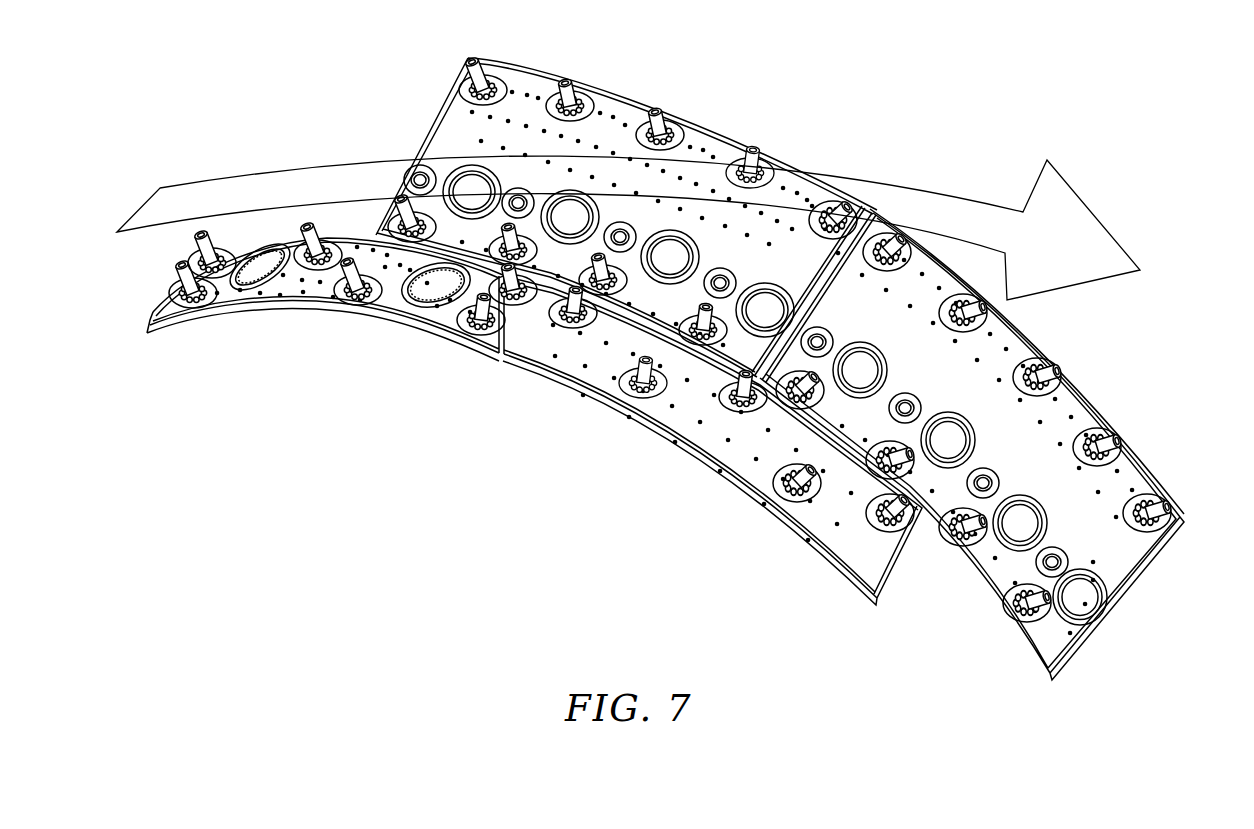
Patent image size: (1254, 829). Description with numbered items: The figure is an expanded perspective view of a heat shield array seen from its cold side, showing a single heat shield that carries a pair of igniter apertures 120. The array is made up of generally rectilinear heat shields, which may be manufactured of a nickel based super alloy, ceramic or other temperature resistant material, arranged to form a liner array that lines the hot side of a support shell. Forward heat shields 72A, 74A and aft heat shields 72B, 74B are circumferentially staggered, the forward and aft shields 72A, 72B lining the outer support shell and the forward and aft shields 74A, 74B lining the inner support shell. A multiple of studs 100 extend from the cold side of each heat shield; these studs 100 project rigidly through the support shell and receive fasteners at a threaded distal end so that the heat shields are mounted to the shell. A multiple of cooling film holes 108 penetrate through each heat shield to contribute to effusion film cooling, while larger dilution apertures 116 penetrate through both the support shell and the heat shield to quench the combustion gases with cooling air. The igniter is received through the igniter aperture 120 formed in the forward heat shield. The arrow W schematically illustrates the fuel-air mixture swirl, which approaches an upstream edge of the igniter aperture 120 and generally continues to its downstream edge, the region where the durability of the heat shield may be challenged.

The studs 100 is at (656, 394).
The cooling film holes 108 is at (977, 360).
The dilution apertures 116 is at (953, 448).
The igniter aperture 120 is at (433, 293).
The arrow W is at (957, 197).
The forward heat shields 72A is at (732, 477).
The forward heat shields 74A is at (910, 585).
The aft heat shields 72B is at (979, 459).
The aft heat shields 74B is at (979, 459).